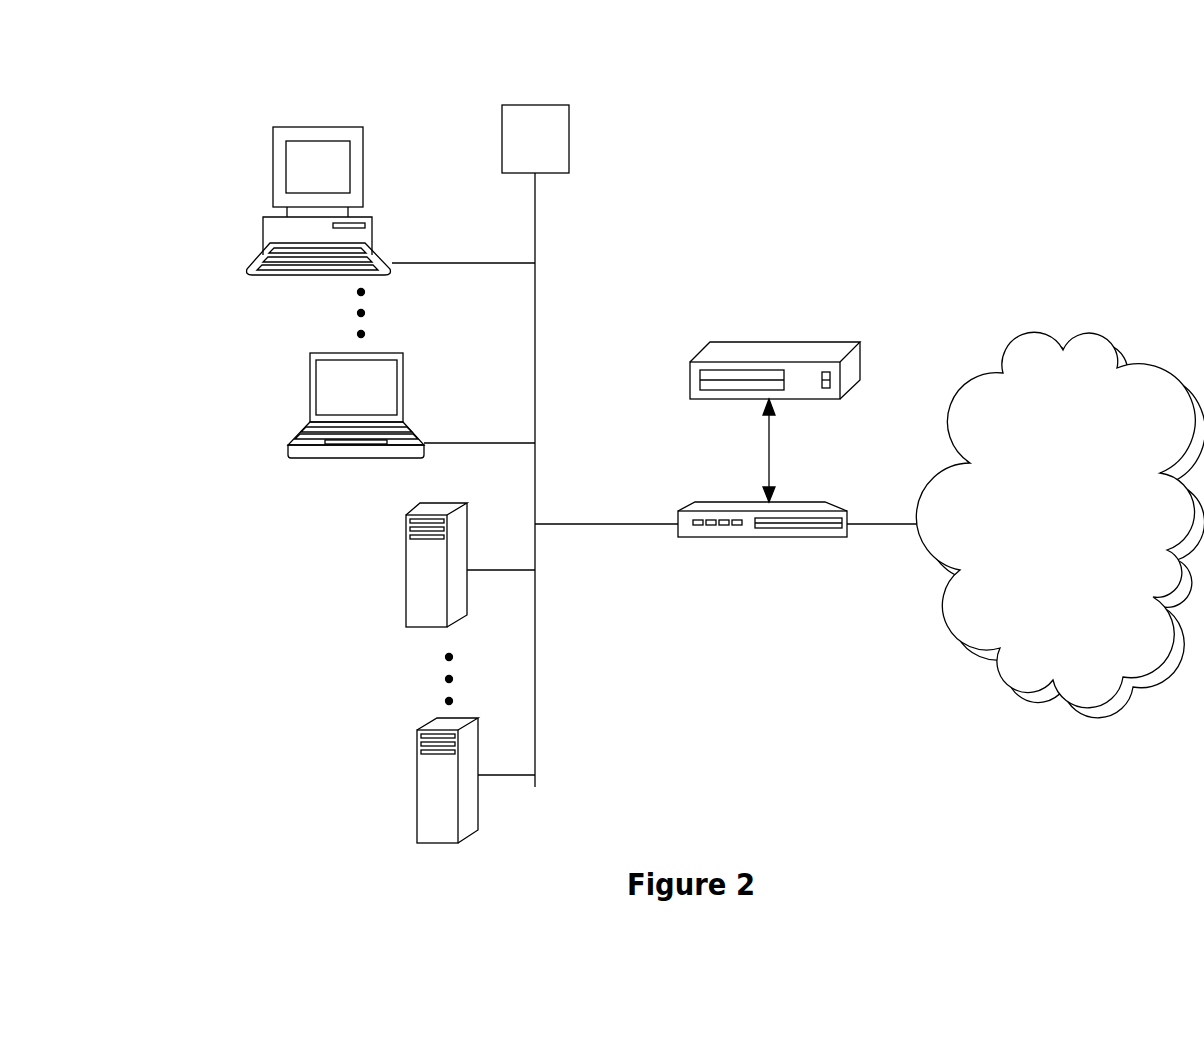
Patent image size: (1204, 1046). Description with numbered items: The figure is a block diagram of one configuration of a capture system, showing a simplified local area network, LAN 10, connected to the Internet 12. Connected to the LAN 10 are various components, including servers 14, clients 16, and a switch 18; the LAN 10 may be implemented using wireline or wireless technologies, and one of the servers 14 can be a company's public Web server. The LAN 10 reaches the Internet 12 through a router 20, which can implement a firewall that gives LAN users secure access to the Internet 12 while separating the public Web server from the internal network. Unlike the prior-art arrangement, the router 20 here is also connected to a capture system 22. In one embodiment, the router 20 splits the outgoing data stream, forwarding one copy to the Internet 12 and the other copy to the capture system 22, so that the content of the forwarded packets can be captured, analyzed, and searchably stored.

The local area network (LAN) 10 is at (540, 480).
The Internet 12 is at (1060, 524).
The servers 14 is at (390, 592).
The clients 16 is at (245, 243).
The switch 18 is at (547, 92).
The router 20 is at (763, 548).
The capture system 22 is at (780, 330).